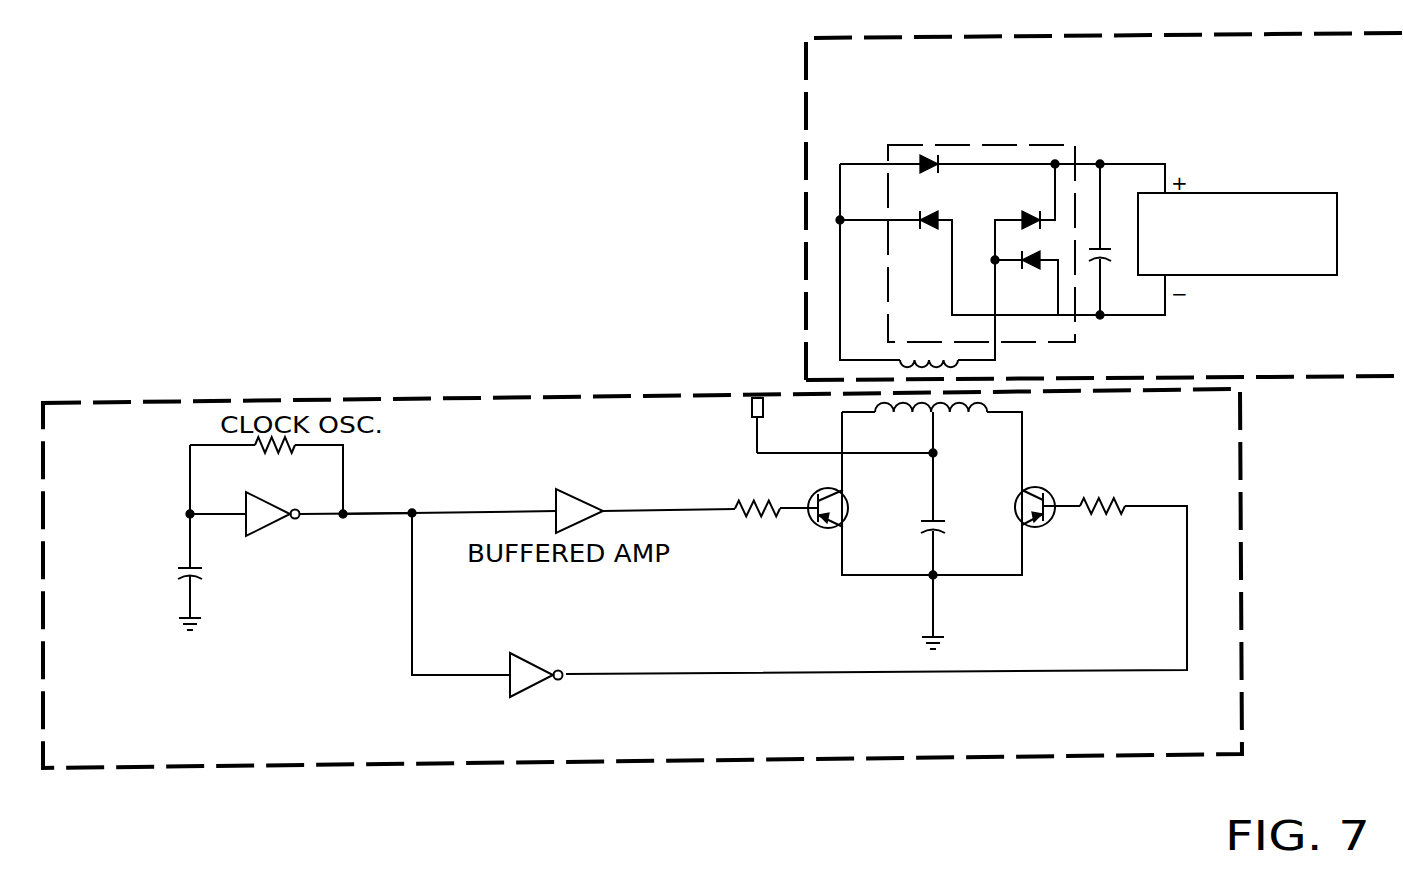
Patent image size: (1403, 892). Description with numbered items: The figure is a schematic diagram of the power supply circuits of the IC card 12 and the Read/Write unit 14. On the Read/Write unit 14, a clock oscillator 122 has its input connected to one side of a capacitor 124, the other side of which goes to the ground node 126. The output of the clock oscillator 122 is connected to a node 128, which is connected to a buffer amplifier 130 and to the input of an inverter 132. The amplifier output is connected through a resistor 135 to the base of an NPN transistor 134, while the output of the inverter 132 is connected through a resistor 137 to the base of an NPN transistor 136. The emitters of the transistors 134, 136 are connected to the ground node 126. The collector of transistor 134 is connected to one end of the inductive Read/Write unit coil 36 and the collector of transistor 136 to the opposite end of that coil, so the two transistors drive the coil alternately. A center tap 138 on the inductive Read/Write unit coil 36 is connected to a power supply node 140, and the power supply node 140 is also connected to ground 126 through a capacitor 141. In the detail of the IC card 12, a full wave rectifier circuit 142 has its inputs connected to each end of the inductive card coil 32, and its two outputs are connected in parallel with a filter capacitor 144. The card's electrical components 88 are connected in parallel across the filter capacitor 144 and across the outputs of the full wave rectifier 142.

The IC card 12 is at (806, 183).
The Read/Write unit 14 is at (298, 772).
The inductive card coil 32 is at (898, 357).
The inductive Read/Write unit coil 36 is at (963, 422).
The card's electrical components 88 is at (1215, 192).
The clock oscillator 122 is at (196, 430).
The capacitor 124 is at (168, 556).
The ground node 126 is at (168, 618).
The node 128 is at (364, 509).
The buffer amplifier 130 is at (548, 568).
The inverter 132 is at (530, 697).
The NPN transistor 134 is at (817, 530).
The resistor 135 is at (736, 520).
The NPN transistor 136 is at (1045, 528).
The resistor 137 is at (1113, 497).
The center tap 138 is at (938, 428).
The power supply node 140 is at (742, 418).
The capacitor 141 is at (950, 540).
The full wave rectifier circuit 142 is at (890, 145).
The filter capacitor 144 is at (1103, 263).